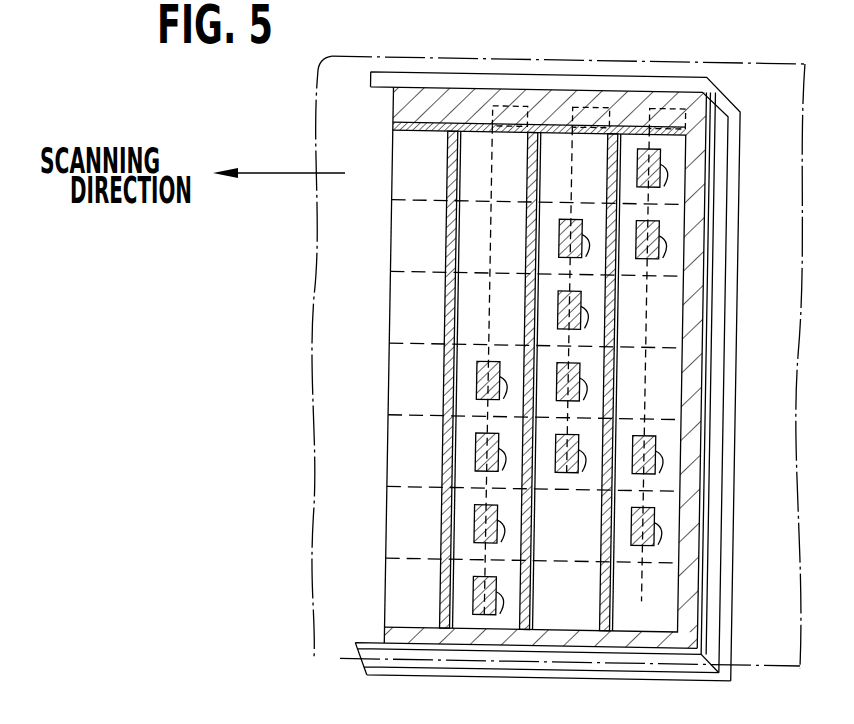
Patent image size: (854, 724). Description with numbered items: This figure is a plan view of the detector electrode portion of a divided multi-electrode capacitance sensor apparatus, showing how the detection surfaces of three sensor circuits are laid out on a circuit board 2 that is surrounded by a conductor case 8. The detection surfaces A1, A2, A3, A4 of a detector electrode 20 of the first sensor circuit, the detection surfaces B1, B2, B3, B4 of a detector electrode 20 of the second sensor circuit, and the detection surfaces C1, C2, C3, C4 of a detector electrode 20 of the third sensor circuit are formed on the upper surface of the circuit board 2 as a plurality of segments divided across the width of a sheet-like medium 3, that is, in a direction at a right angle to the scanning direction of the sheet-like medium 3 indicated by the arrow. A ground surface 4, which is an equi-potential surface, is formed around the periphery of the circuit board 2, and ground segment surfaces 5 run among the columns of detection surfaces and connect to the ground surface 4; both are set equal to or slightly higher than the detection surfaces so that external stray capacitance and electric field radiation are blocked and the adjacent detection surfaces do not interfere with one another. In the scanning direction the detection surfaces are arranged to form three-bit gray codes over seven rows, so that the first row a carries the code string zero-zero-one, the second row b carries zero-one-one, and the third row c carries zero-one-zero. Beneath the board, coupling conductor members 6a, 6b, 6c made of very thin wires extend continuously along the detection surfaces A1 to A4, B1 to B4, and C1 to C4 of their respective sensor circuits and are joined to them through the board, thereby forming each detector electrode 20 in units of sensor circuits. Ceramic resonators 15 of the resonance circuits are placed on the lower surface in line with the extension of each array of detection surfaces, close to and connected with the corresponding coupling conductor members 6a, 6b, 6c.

The circuit board 2 is at (400, 235).
The sheet-like medium 3 is at (311, 368).
The ground surface 4 is at (418, 100).
The ground segment surfaces 5 is at (444, 444).
The coupling conductor member 6a is at (646, 358).
The coupling conductor member 6b is at (570, 195).
The coupling conductor member 6c is at (492, 259).
The conductor case 8 is at (388, 675).
The ceramic resonator 15 is at (503, 113).
The detector electrode 20 is at (468, 142).
The first row a is at (678, 160).
The second row b is at (678, 234).
The third row c is at (674, 309).
The detection surface A1 is at (659, 177).
The detection surface A2 is at (657, 249).
The detection surface A3 is at (654, 464).
The detection surface A4 is at (653, 535).
The detection surface B1 is at (580, 247).
The detection surface B2 is at (579, 319).
The detection surface B3 is at (578, 391).
The detection surface B4 is at (577, 462).
The detection surface C1 is at (498, 389).
The detection surface C2 is at (497, 461).
The detection surface C3 is at (496, 533).
The detection surface C4 is at (494, 604).